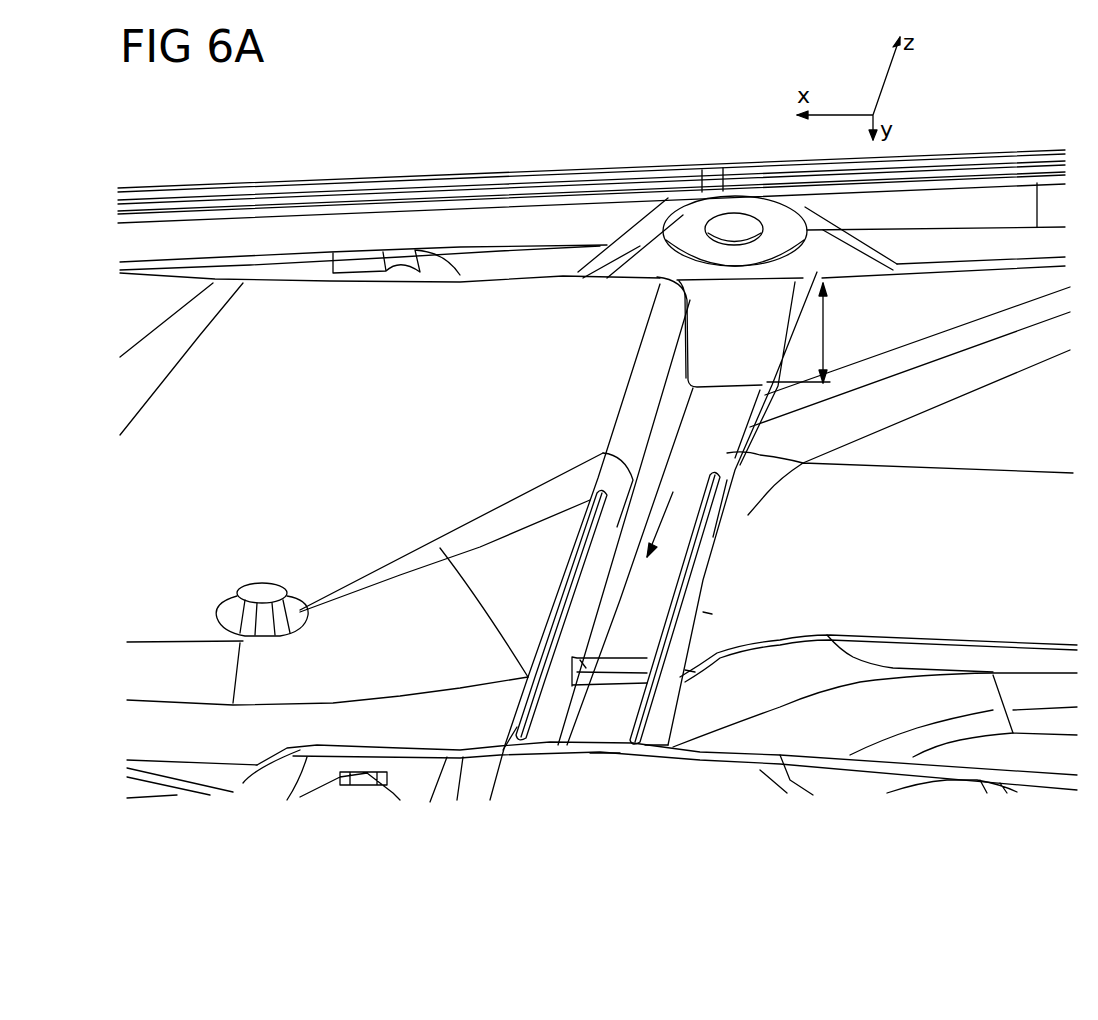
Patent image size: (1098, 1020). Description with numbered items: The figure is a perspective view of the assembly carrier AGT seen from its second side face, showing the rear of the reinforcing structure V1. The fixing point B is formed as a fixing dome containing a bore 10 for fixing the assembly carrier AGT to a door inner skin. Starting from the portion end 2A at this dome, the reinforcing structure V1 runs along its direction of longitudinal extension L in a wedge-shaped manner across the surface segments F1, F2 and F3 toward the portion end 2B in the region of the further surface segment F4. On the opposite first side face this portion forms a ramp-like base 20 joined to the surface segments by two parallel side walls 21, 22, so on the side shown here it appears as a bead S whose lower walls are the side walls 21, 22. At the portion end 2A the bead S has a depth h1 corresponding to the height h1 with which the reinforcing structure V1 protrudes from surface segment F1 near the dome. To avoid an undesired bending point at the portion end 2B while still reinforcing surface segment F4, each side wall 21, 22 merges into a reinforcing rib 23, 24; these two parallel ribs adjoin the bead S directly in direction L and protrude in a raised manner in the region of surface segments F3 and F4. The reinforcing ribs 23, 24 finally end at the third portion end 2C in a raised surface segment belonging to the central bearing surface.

The assembly carrier AGT is at (407, 163).
The fixing point B is at (643, 243).
The bore 10 is at (717, 217).
The portion end 2A is at (683, 302).
The portion end 2B is at (590, 667).
The portion end 2C is at (605, 750).
The base 20 is at (657, 605).
The side wall 21 is at (673, 382).
The side wall 22 is at (757, 393).
The reinforcing rib 23 is at (543, 728).
The reinforcing rib 24 is at (655, 733).
The bead S is at (727, 470).
The direction of longitudinal extension L is at (666, 524).
The reinforcing structure V1 is at (613, 452).
The surface segment F1 is at (428, 430).
The surface segment F2 is at (440, 548).
The surface segment F3 is at (380, 656).
The surface segment F4 is at (475, 736).
The depth/height h1 is at (812, 333).